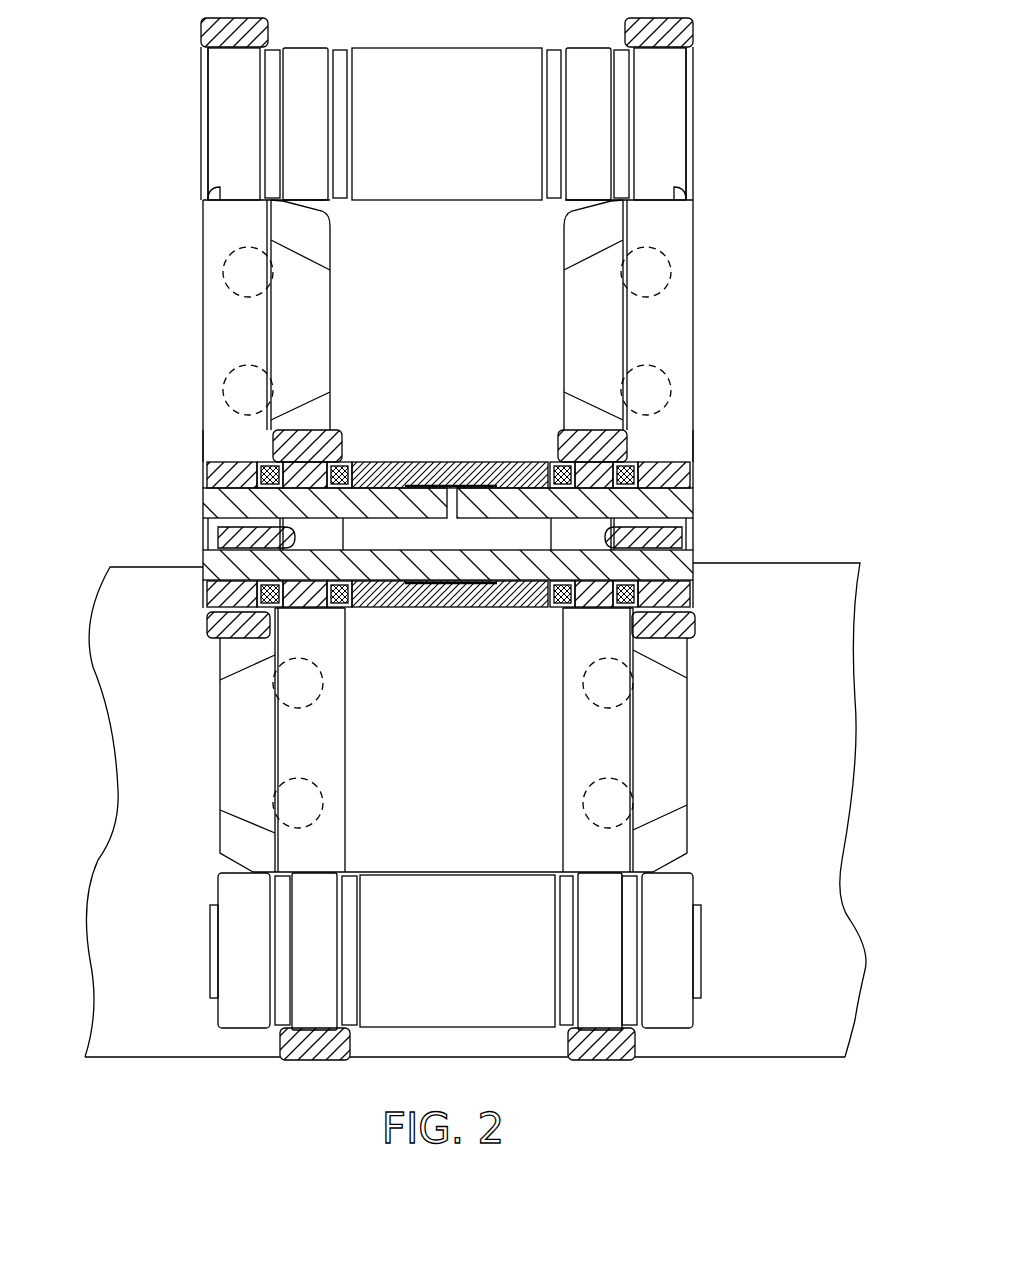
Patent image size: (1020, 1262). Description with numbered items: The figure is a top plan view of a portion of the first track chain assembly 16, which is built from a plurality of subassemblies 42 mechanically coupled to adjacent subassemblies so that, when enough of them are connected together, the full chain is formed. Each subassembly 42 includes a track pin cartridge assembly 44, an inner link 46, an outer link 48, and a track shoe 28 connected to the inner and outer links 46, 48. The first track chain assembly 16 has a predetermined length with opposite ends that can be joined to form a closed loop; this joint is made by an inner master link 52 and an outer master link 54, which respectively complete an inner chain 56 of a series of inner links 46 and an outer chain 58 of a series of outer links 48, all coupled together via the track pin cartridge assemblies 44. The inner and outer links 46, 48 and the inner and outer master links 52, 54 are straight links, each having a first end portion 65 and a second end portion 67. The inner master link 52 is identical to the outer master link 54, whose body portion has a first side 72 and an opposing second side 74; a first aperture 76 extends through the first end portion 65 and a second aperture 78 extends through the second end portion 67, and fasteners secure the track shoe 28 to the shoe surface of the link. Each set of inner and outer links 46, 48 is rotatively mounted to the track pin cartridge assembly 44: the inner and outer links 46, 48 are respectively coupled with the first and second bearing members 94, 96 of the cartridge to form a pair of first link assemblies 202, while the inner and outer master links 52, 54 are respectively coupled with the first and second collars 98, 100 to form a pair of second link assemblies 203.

The first track chain assembly 16 is at (104, 142).
The track shoe 28 is at (138, 567).
The subassembly 42 is at (688, 663).
The track pin cartridge assembly 44 is at (467, 204).
The inner link 46 is at (220, 840).
The outer link 48 is at (687, 835).
The inner master link 52 is at (201, 118).
The outer master link 54 is at (693, 105).
The inner chain 56 is at (203, 397).
The outer chain 58 is at (693, 385).
The first end portion 65 is at (207, 633).
The second end portion 67 is at (200, 35).
The first side 72 is at (203, 318).
The second side 74 is at (330, 343).
The first aperture 76 is at (207, 465).
The second aperture 78 is at (205, 188).
The first bearing member 94 is at (312, 608).
The second bearing member 96 is at (587, 612).
The first collar 98 is at (210, 597).
The second collar 100 is at (688, 592).
The first link assembly 202 is at (357, 612).
The second link assembly 203 is at (199, 437).